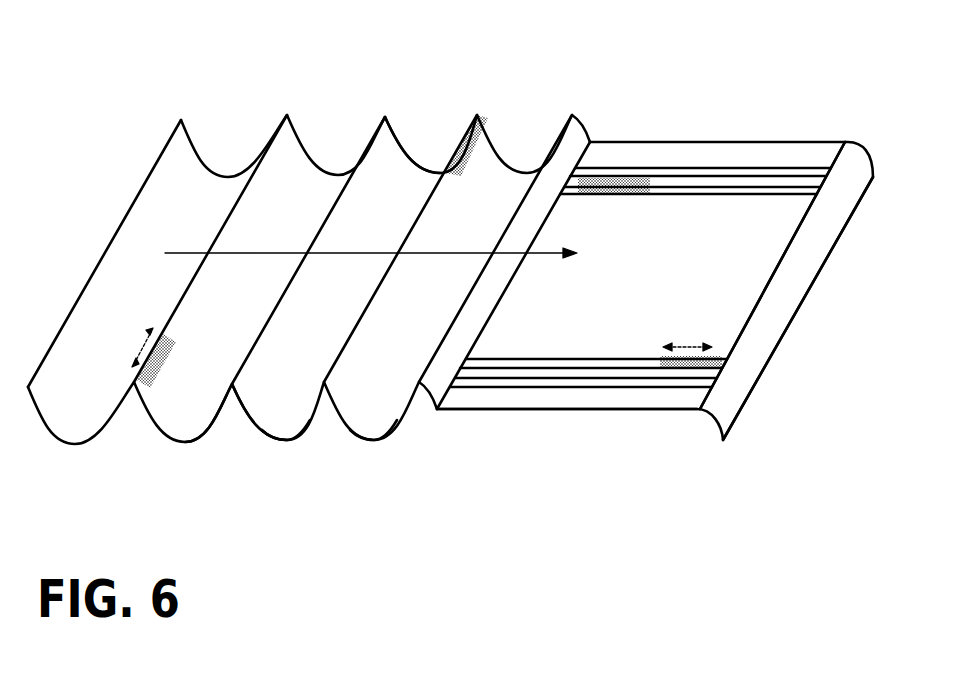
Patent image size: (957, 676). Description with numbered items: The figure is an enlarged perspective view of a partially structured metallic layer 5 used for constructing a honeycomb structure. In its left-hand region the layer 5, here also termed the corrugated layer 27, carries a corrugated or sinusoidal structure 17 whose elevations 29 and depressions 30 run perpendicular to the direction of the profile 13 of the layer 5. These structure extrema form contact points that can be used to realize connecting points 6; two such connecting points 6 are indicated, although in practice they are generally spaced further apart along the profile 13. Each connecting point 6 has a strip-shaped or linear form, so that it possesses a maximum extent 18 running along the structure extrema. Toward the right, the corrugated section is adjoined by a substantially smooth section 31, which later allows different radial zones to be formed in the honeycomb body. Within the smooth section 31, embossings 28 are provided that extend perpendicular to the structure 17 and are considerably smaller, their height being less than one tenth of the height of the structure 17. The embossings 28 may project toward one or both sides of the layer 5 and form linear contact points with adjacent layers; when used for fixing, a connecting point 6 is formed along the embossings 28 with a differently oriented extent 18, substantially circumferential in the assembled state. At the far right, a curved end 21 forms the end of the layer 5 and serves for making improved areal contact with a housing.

The metallic layer 5 is at (125, 182).
The corrugated layer 27 is at (405, 153).
The direction of the profile 13 is at (457, 253).
The connecting point 6 is at (640, 183).
The extent 18 is at (140, 350).
The elevations 29 is at (233, 384).
The depressions 30 is at (283, 443).
The corrugated structure 17 is at (375, 442).
The smooth section 31 is at (528, 411).
The embossings 28 is at (633, 370).
The curved end 21 is at (742, 385).